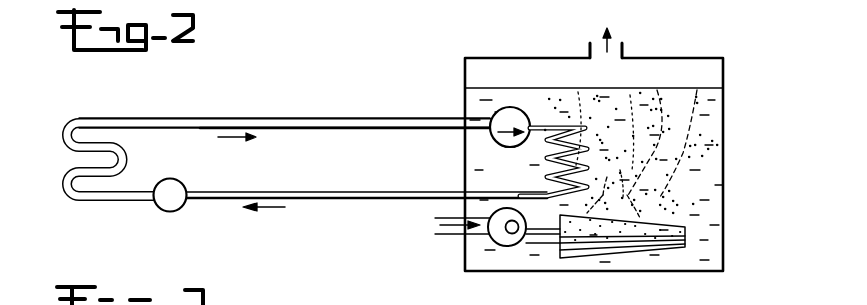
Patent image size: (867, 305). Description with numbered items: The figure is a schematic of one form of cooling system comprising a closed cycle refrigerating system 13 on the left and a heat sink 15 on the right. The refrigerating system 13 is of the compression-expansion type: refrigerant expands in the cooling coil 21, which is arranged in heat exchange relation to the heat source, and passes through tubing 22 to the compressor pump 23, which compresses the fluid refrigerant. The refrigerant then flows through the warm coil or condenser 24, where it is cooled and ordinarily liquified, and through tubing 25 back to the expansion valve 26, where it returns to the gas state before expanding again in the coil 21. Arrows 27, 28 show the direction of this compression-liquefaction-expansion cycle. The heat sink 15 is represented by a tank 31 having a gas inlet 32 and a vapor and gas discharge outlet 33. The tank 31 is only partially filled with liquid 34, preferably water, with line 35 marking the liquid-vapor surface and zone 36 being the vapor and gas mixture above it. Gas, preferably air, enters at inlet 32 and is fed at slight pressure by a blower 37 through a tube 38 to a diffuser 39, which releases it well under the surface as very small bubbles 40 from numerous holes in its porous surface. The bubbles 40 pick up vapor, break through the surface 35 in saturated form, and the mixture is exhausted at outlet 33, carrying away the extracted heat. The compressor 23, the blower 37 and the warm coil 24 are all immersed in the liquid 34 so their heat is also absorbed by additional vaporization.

The closed cycle refrigerating system 13 is at (347, 108).
The heat sink 15 is at (696, 299).
The cooling coil 21 is at (70, 150).
The tubing 22 is at (197, 118).
The compressor pump 23 is at (494, 110).
The warm coil or condenser 24 is at (553, 182).
The tubing 25 is at (335, 199).
The expansion valve 26 is at (177, 211).
The arrow 27 is at (230, 138).
The arrow 28 is at (262, 207).
The tank 31 is at (724, 135).
The gas inlet 32 is at (437, 234).
The vapor and gas discharge outlet 33 is at (588, 43).
The liquid 34 is at (713, 100).
The liquid-vapor surface 35 is at (697, 93).
The vapor and gas mixture zone 36 is at (633, 65).
The blower 37 is at (500, 247).
The tube 38 is at (552, 248).
The diffuser 39 is at (608, 252).
The bubbles 40 is at (695, 187).